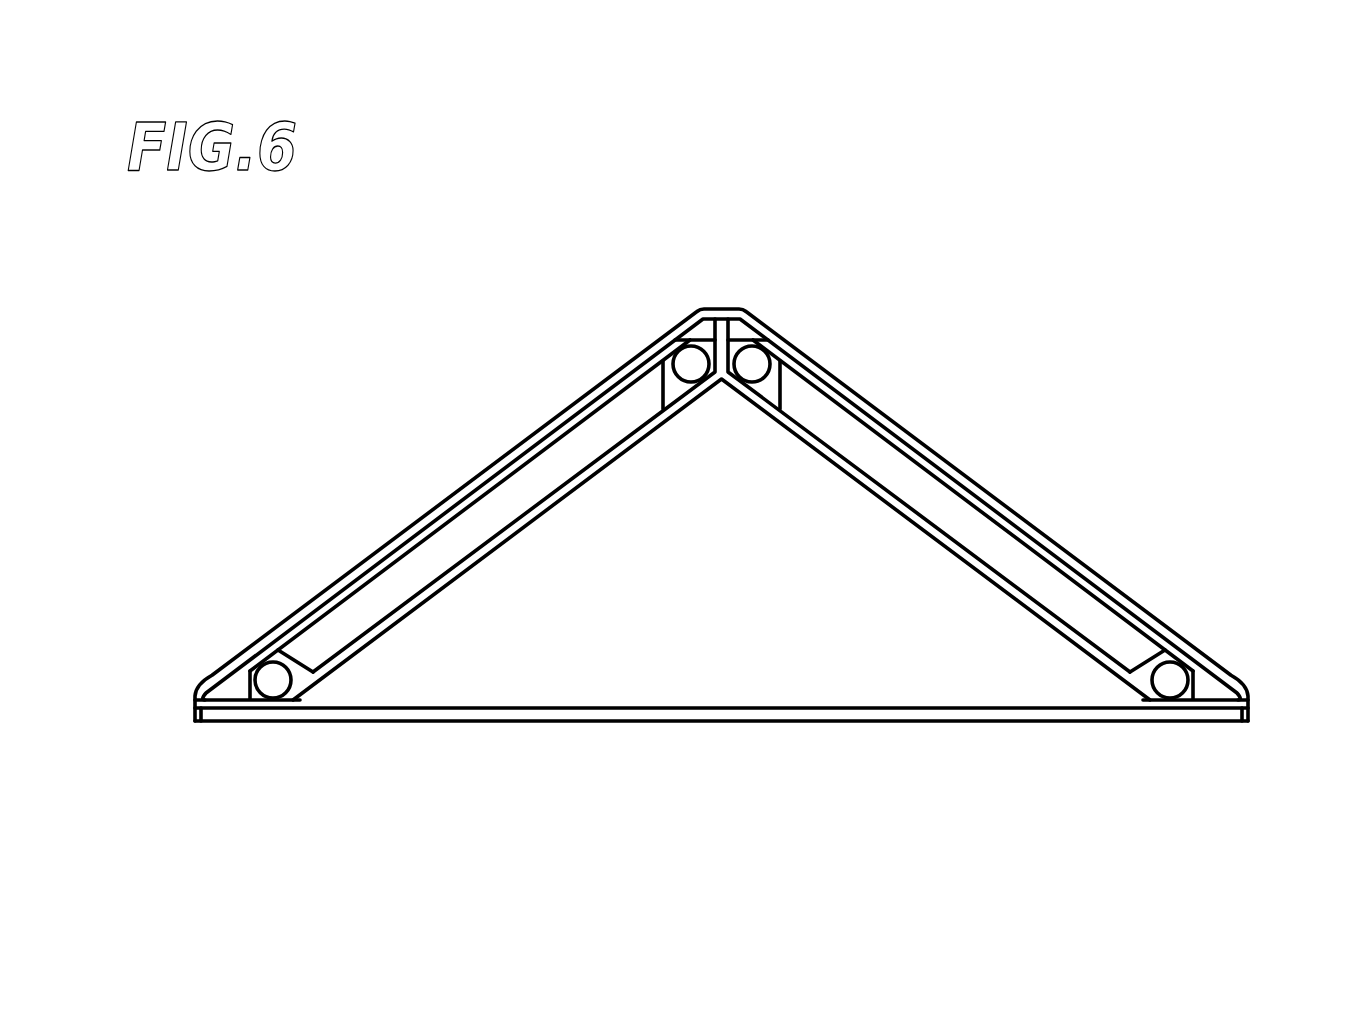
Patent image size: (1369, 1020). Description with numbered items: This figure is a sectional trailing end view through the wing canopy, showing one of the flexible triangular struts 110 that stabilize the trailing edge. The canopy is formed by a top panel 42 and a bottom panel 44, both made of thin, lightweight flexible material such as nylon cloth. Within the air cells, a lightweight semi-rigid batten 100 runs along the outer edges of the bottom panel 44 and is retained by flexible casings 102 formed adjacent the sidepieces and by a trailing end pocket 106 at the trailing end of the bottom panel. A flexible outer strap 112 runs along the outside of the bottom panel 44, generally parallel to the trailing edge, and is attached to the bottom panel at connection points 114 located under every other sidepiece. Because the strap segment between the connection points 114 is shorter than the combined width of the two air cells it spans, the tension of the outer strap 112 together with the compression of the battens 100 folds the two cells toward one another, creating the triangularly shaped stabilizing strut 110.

The triangular strut 110 is at (858, 240).
The top panel 42 is at (340, 578).
The trailing end pocket 106 is at (540, 447).
The batten 100 is at (461, 541).
The bottom panel 44 is at (514, 533).
The flexible casing 102 is at (680, 343).
The outer strap 112 is at (933, 722).
The connection point 114 is at (196, 724).